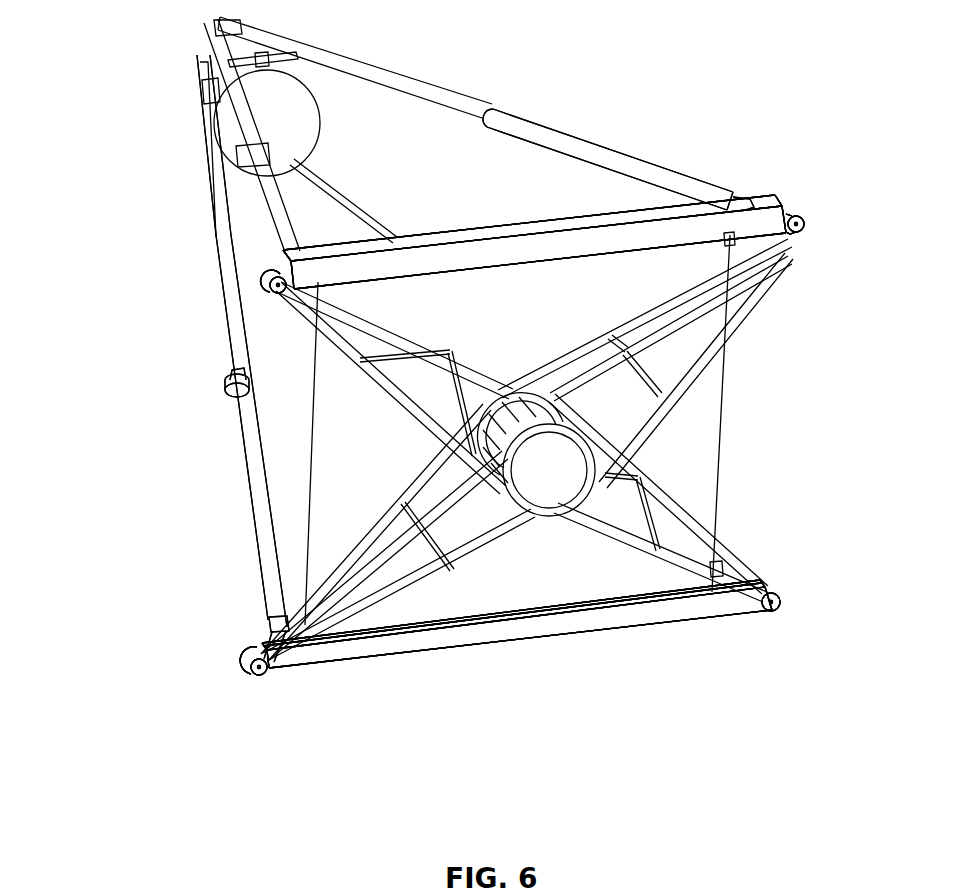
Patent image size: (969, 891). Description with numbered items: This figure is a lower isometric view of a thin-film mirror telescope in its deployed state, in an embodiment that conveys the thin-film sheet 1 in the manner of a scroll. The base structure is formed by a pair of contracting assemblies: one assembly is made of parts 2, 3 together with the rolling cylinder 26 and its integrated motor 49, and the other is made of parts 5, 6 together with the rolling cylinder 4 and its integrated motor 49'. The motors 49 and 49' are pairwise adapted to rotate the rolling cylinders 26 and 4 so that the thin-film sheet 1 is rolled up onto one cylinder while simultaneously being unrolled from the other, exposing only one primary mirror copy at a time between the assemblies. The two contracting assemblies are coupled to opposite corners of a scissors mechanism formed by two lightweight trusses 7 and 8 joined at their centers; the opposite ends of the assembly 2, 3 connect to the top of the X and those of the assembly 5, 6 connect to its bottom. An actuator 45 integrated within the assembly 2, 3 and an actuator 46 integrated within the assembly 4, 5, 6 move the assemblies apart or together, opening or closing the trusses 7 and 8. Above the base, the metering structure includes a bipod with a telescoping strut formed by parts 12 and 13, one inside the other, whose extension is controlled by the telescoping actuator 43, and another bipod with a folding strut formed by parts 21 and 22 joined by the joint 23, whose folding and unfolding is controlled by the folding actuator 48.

The thin-film sheet 1 is at (688, 440).
The contracting assembly part 2 is at (362, 179).
The contracting assembly part 3 is at (395, 179).
The rolling cylinder 4 is at (682, 711).
The contracting assembly part 5 is at (714, 711).
The contracting assembly part 6 is at (746, 711).
The truss 7 is at (655, 300).
The truss 8 is at (690, 508).
The telescoping strut part 12 is at (428, 93).
The telescoping strut part 13 is at (586, 75).
The telescoping actuator 43 is at (632, 75).
The folding strut part 21 is at (257, 458).
The folding strut part 22 is at (238, 318).
The joint 23 is at (54, 387).
The folding actuator 48 is at (98, 387).
The rolling cylinder 26 is at (438, 179).
The motor 49 is at (532, 225).
The actuator 45 is at (508, 179).
The motor 49' is at (521, 646).
The actuator 46 is at (830, 711).